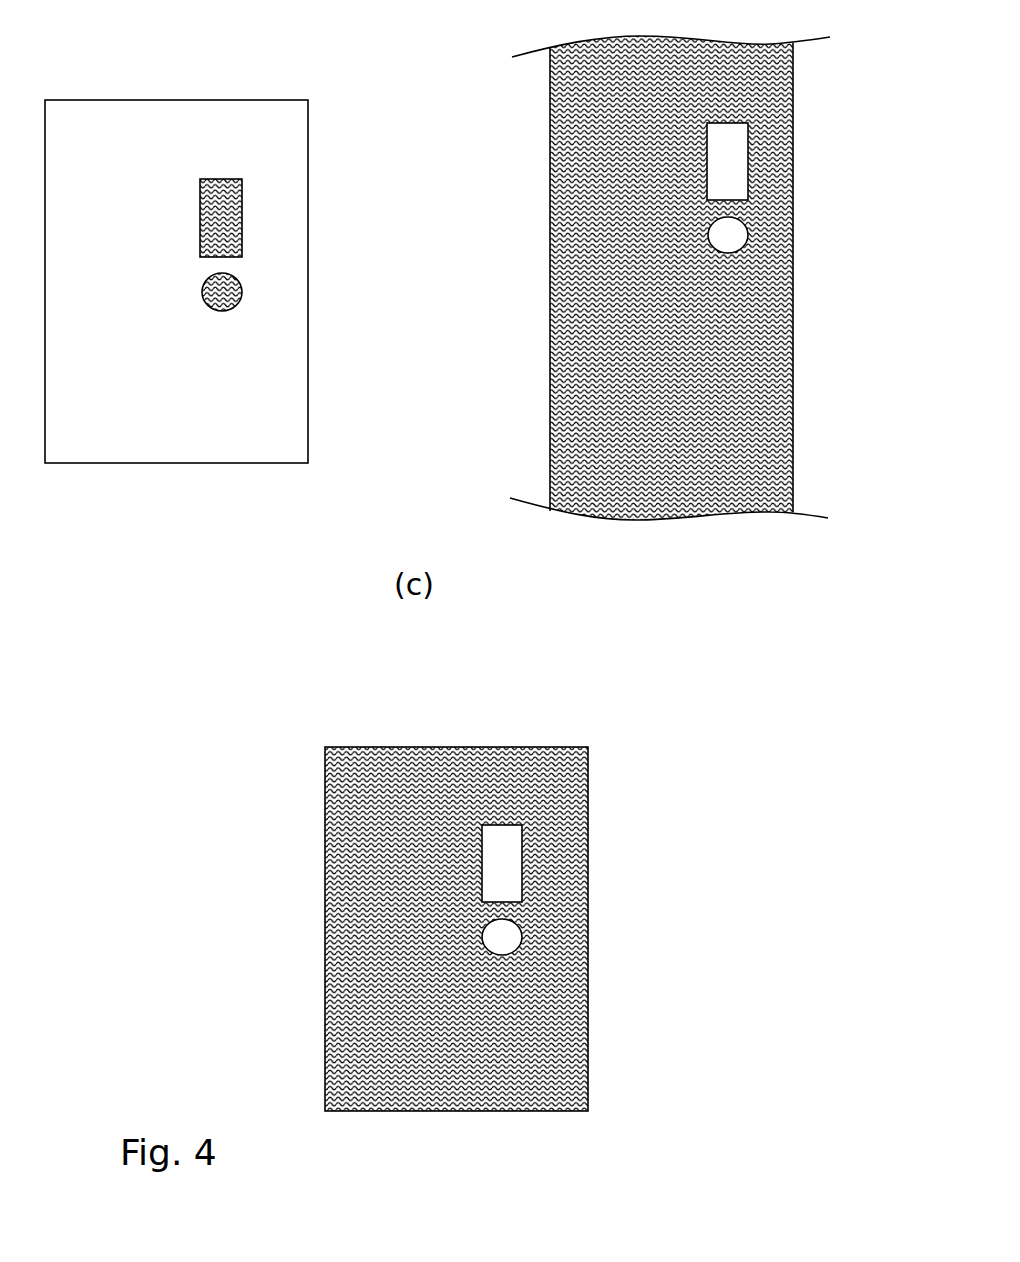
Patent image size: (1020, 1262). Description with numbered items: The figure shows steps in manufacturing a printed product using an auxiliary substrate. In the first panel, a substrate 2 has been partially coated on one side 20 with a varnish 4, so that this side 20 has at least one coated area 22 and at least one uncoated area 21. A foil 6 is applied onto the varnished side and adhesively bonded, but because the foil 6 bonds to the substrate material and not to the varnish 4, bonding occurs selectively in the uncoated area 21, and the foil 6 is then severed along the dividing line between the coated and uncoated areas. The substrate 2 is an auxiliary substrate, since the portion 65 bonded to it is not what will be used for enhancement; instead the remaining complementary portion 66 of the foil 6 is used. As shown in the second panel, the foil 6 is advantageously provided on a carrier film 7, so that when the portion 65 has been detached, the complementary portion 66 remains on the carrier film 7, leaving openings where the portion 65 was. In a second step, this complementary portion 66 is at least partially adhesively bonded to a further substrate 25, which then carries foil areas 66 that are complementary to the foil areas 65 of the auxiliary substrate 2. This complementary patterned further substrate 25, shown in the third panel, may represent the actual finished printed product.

The substrate 2 is at (238, 103).
The varnish 4 is at (246, 281).
The foil 6 is at (565, 442).
The carrier film 7 is at (728, 162).
The side 20 is at (136, 110).
The uncoated area 21 is at (243, 288).
The coated area 22 is at (272, 424).
The further substrate 25 is at (517, 747).
The portion 65 is at (323, 243).
The complementary portion 66 is at (762, 438).